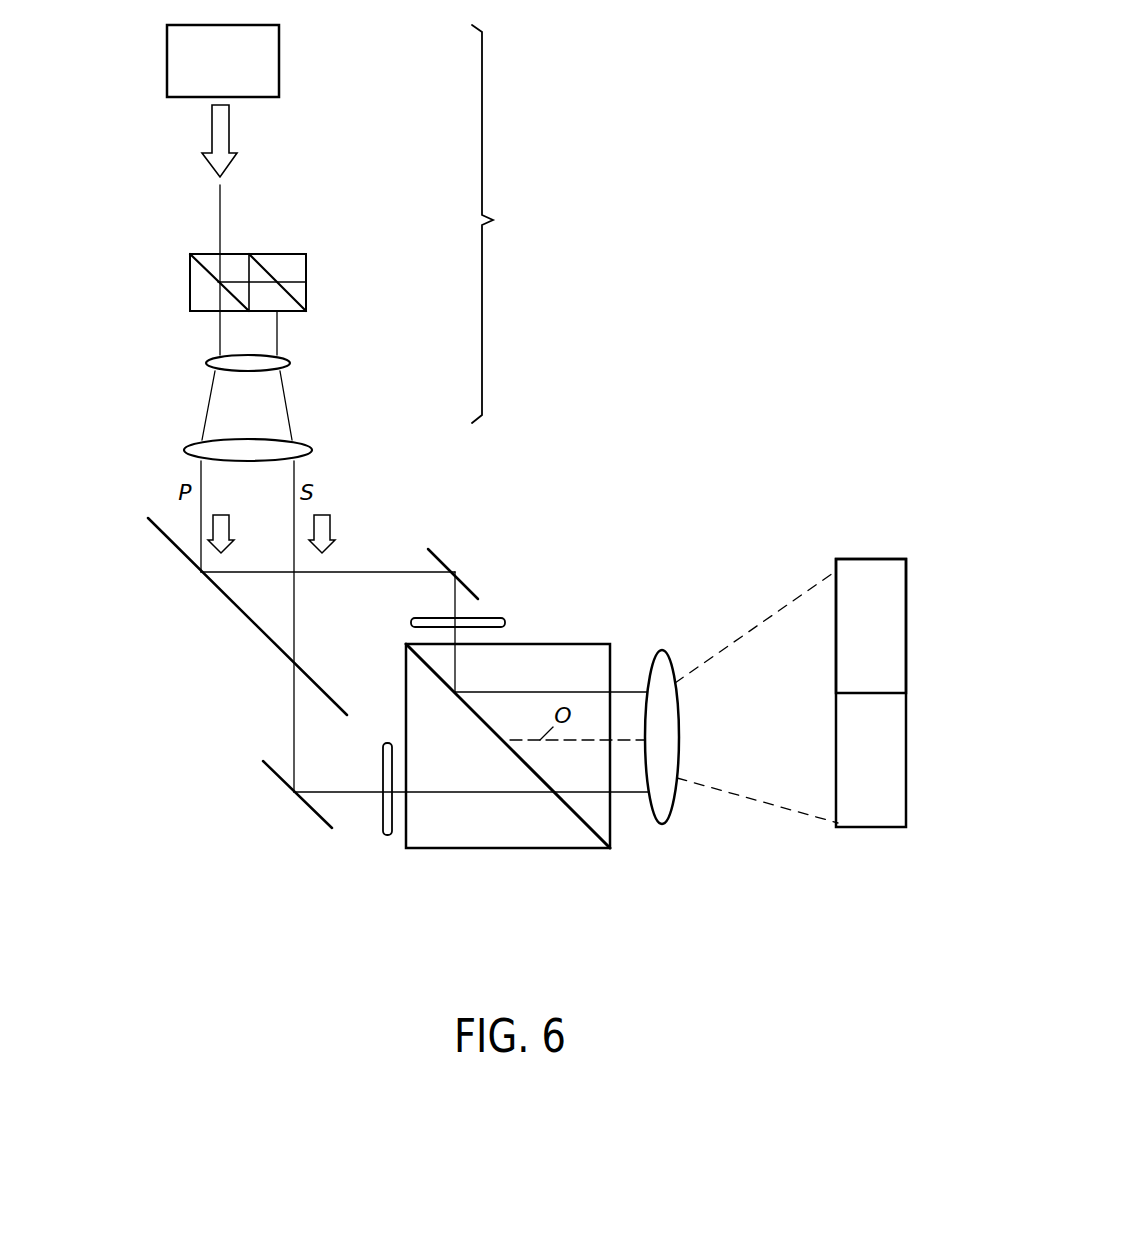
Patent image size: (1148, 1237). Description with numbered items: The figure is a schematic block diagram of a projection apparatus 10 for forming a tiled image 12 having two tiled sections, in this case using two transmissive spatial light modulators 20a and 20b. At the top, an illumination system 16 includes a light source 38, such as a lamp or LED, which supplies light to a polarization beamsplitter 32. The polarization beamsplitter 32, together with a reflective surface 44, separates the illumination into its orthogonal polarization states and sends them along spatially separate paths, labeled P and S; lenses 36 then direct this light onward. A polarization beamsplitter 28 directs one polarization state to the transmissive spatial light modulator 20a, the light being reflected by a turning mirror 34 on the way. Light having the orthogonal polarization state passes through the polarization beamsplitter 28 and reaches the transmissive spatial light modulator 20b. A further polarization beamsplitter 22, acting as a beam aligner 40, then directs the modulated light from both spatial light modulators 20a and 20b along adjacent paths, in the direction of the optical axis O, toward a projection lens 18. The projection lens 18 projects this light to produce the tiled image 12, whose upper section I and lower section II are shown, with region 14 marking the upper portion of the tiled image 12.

The optical system 10 is at (626, 150).
The tiled image 12 is at (867, 830).
The target region 14 is at (868, 557).
The illumination system 16 is at (497, 224).
The projection lens 18 is at (667, 823).
The transmissive spatial light modulator 20a is at (505, 619).
The transmissive spatial light modulator 20b is at (382, 823).
The polarization beamsplitter 22 is at (553, 849).
The polarization beamsplitter 28 is at (193, 567).
The polarization beamsplitter 32 is at (202, 253).
The turning mirror 34 is at (463, 574).
The lenses 36 is at (290, 360).
The light source 38 is at (282, 57).
The beam aligner 40 is at (582, 634).
The reflective surface 44 is at (283, 287).